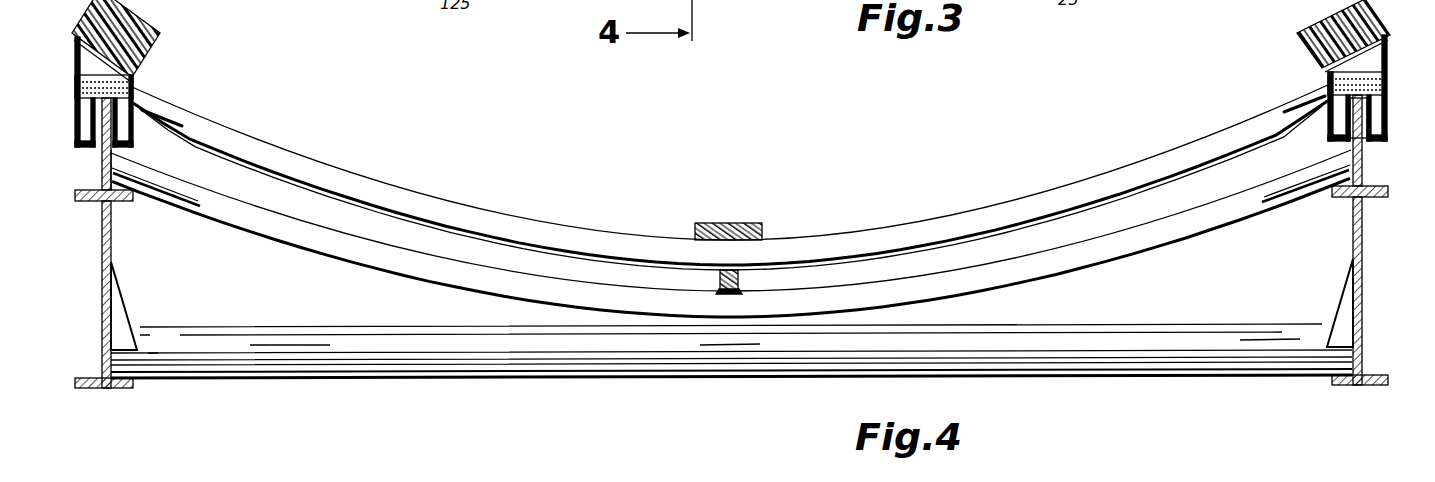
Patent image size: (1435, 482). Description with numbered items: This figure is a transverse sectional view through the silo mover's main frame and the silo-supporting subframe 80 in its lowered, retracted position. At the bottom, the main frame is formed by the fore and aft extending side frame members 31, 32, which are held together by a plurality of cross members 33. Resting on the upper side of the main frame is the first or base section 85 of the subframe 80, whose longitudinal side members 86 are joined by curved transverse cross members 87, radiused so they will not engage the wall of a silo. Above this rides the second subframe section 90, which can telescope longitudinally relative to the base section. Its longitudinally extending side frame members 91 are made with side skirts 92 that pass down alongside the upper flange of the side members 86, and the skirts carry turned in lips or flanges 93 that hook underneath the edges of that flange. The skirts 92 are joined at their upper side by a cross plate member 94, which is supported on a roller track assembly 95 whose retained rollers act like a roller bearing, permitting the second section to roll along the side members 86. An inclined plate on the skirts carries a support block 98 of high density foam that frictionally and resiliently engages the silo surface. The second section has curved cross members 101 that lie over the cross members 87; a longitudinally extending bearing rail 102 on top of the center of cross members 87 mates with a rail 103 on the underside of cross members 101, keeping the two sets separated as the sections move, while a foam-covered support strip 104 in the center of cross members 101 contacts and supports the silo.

The side frame member 31 is at (114, 262).
The side frame member 32 is at (1362, 247).
The cross members 33 is at (658, 378).
The subframe 80 is at (349, 169).
The first section 85 is at (97, 162).
The longitudinal side members 86 is at (115, 153).
The curved transverse cross members 87 is at (1150, 244).
The second subframe section 90 is at (1403, 79).
The side frame members 91 is at (152, 85).
The side skirts 92 is at (75, 118).
The turned in lips 93 is at (1387, 117).
The cross plate member 94 is at (103, 77).
The roller track assembly 95 is at (133, 77).
The support block 98 is at (133, 23).
The cross members 101 is at (548, 225).
The bearing rail 102 is at (718, 284).
The mating rail 103 is at (742, 283).
The support strip 104 is at (732, 222).